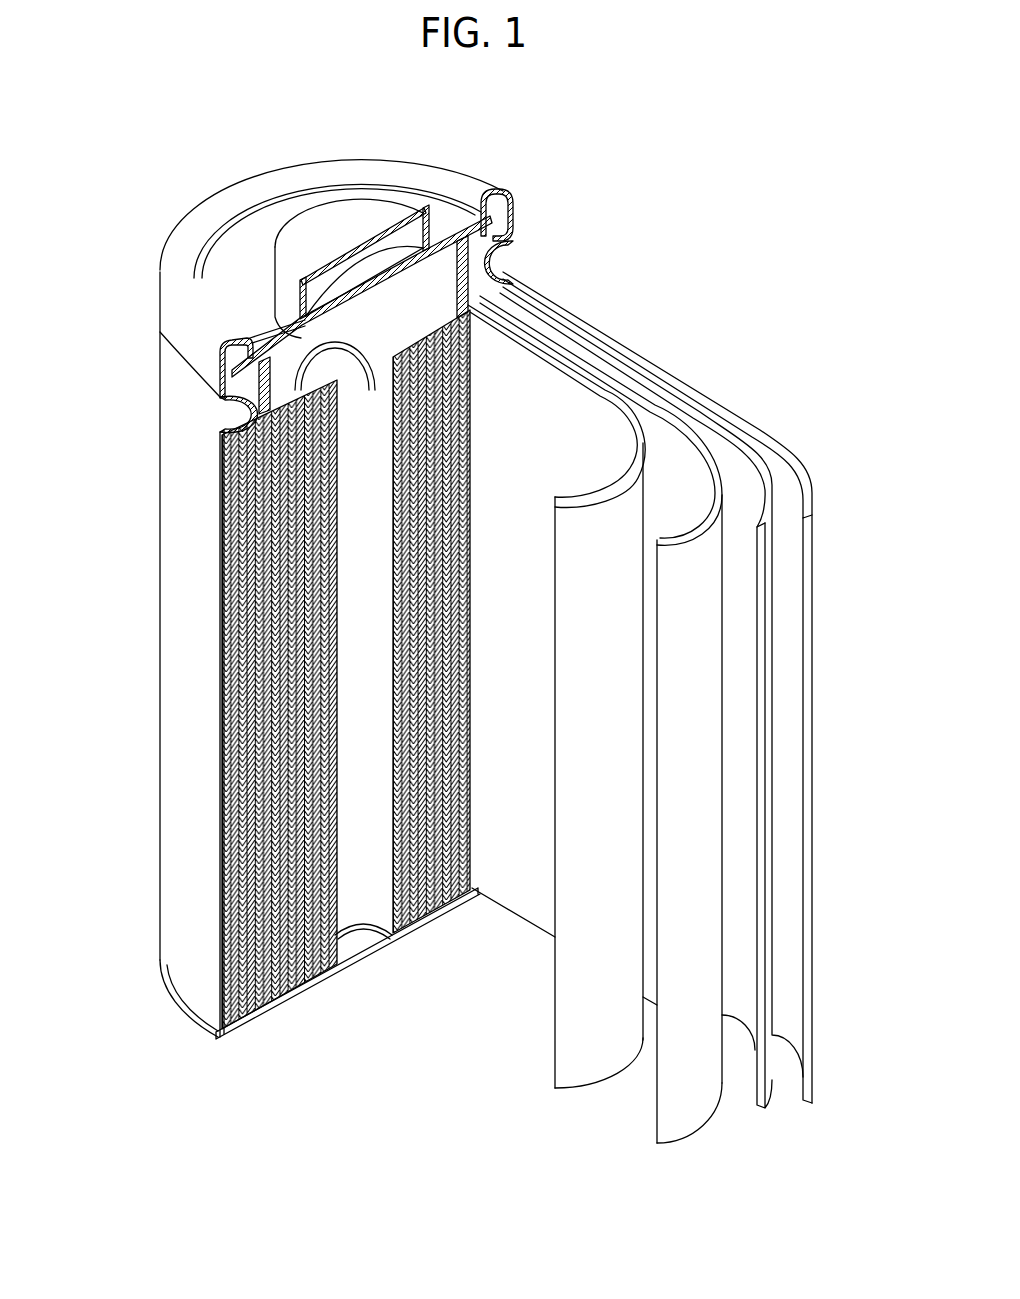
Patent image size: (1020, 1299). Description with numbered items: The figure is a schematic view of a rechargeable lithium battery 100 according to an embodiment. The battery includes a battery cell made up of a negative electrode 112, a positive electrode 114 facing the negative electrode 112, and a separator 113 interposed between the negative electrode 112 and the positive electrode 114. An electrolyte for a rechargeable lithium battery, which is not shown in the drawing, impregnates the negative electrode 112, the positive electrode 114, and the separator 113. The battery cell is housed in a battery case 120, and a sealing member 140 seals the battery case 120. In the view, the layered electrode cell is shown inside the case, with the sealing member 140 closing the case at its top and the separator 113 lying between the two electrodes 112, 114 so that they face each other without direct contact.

The rechargeable lithium battery 100 is at (506, 150).
The negative electrode 112 is at (774, 450).
The separator 113 is at (528, 353).
The positive electrode 114 is at (658, 418).
The battery case 120 is at (168, 645).
The sealing member 140 is at (317, 212).